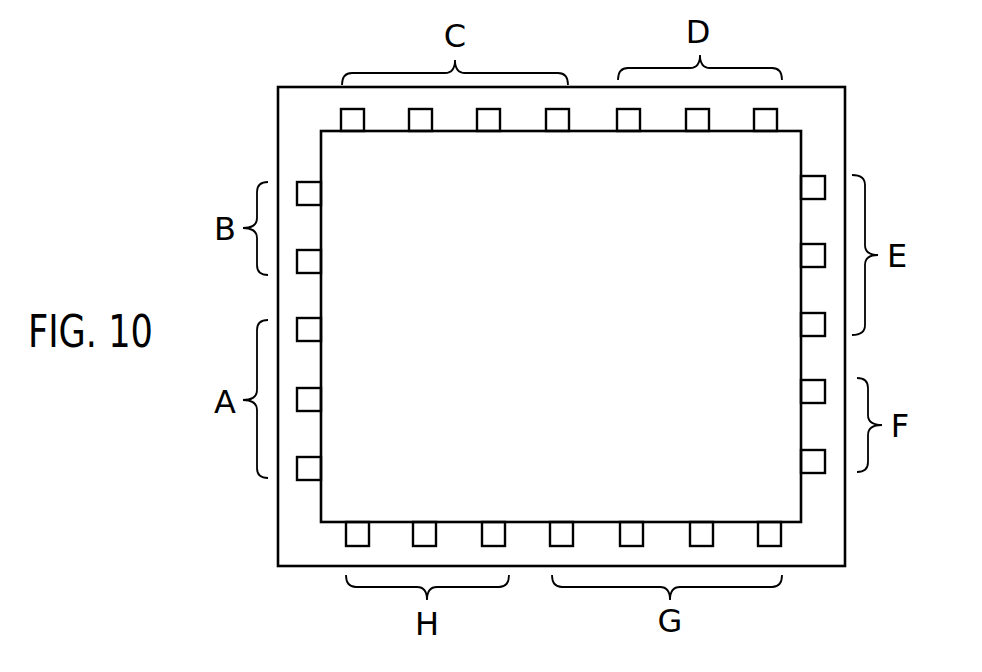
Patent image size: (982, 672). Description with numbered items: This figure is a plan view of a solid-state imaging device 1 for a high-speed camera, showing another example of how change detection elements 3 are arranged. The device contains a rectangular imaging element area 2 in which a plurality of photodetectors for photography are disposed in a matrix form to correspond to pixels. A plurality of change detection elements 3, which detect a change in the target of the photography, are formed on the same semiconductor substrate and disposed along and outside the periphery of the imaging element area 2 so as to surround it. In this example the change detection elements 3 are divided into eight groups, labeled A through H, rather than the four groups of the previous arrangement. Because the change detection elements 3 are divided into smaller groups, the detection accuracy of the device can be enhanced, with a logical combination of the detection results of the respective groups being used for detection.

The solid-state imaging device 1 is at (808, 87).
The imaging element area 2 is at (801, 146).
The change detection elements 3 is at (560, 118).